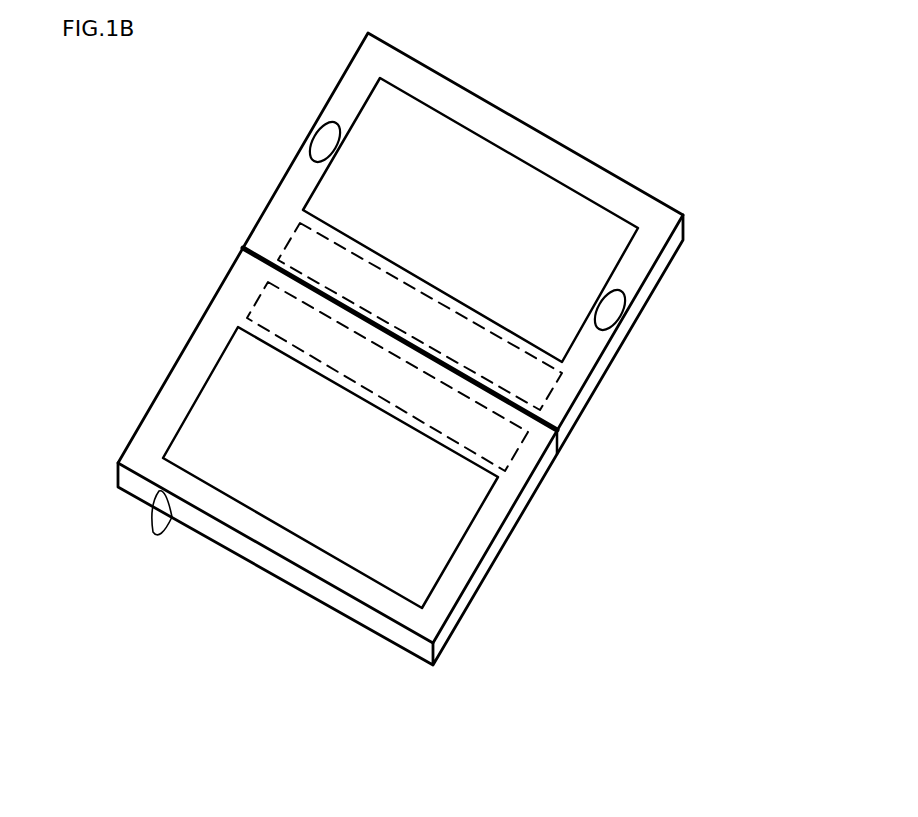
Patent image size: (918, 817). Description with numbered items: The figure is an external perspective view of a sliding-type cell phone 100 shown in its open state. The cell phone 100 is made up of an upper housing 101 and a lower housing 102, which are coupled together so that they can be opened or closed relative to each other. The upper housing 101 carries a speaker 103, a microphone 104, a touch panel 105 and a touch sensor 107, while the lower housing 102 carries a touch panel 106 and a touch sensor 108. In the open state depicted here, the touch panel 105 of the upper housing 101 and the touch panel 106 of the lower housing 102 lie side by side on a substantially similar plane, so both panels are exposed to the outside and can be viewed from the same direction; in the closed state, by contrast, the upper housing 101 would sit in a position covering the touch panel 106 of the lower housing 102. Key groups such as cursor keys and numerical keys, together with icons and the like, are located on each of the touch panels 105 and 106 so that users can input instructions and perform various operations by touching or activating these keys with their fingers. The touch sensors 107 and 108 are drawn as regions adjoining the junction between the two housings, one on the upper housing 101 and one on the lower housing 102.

The cell phone 100 is at (628, 97).
The upper housing 101 is at (605, 170).
The lower housing 102 is at (172, 517).
The speaker 103 is at (325, 138).
The microphone 104 is at (610, 308).
The touch panel 105 is at (420, 143).
The touch panel 106 is at (232, 415).
The touch sensor 107 is at (307, 238).
The touch sensor 108 is at (300, 313).